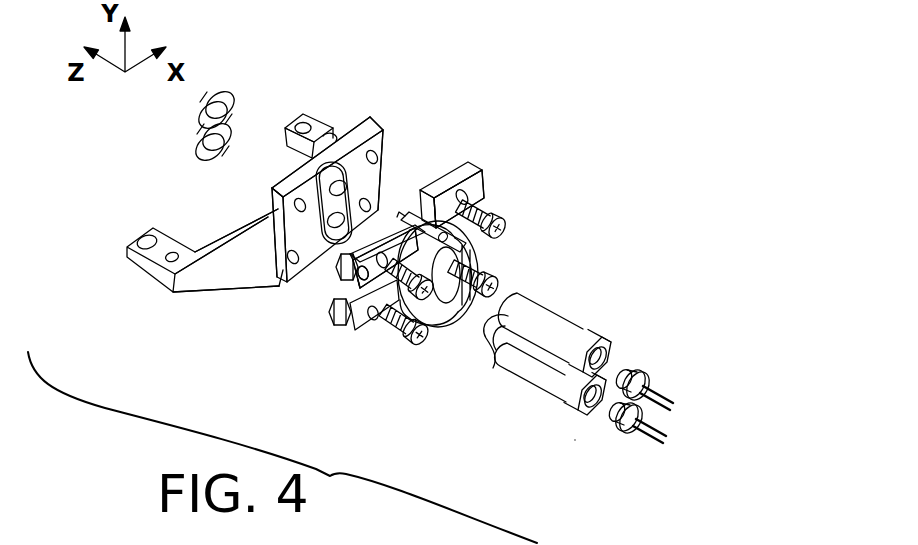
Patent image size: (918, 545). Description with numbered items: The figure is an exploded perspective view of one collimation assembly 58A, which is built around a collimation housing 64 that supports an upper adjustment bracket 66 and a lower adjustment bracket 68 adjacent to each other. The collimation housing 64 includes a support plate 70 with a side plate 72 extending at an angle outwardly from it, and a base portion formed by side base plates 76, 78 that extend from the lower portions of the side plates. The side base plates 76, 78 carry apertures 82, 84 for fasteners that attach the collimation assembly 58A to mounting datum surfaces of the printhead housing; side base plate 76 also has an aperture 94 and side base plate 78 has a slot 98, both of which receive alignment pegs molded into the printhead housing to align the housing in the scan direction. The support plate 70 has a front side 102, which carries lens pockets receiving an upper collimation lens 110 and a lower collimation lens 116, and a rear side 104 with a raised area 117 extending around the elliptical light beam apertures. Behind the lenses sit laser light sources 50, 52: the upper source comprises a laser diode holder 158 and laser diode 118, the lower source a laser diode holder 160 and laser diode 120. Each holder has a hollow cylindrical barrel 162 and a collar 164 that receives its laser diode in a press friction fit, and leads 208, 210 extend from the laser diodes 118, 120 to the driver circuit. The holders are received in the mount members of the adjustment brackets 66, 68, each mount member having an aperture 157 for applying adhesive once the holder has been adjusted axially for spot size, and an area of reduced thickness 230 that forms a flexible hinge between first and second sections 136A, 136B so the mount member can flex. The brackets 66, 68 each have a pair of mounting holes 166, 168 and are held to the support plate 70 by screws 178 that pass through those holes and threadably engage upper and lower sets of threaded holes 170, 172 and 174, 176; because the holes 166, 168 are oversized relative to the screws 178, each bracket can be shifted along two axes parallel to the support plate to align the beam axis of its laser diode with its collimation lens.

The laser light source 50 is at (691, 289).
The laser light source 52 is at (569, 457).
The collimation assembly 58A is at (617, 212).
The collimation housing 64 is at (389, 94).
The upper adjustment bracket 66 is at (500, 162).
The lower adjustment bracket 68 is at (321, 359).
The support plate 70 is at (370, 117).
The side plate 72 is at (218, 253).
The side base plate 76 is at (143, 267).
The side base plate 78 is at (322, 126).
The aperture 82 is at (136, 242).
The aperture 84 is at (302, 120).
The aperture 94 is at (169, 251).
The slot 98 is at (333, 127).
The front side 102 is at (278, 174).
The rear side 104 is at (280, 280).
The upper collimation lens 110 is at (218, 100).
The lower collimation lens 116 is at (197, 145).
The raised area 117 is at (400, 158).
The laser diode 118 is at (650, 376).
The laser diode 120 is at (625, 432).
The first section of mount member 136A is at (405, 280).
The second section of mount member 136B is at (470, 243).
The aperture 157 is at (455, 222).
The laser diode holder 158 is at (604, 306).
The laser diode holder 160 is at (512, 388).
The barrel 162 is at (493, 368).
The collar 164 is at (612, 340).
The mounting hole 166 is at (466, 200).
The mounting hole 168 is at (340, 285).
The threaded hole 170 is at (398, 152).
The threaded hole 172 is at (281, 205).
The threaded hole 174 is at (371, 203).
The threaded hole 176 is at (178, 292).
The screw 178 is at (505, 247).
The leads 208 is at (674, 402).
The leads 210 is at (667, 438).
The area of reduced thickness 230 is at (441, 201).